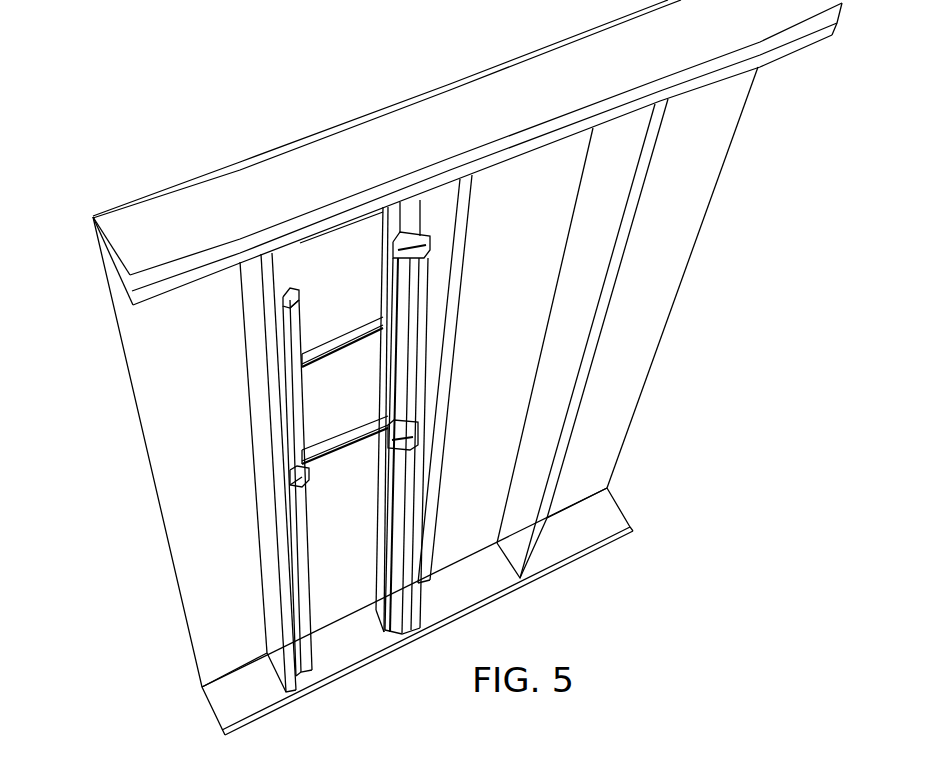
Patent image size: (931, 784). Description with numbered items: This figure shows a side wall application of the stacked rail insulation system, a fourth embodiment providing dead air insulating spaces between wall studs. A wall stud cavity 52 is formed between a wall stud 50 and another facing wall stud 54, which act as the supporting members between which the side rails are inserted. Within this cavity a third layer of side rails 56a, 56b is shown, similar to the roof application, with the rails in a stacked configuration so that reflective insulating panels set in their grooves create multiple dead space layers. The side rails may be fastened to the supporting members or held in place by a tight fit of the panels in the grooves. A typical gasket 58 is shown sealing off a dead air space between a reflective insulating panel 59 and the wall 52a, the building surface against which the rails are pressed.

The wall stud 50 is at (450, 326).
The wall stud cavity 52 is at (335, 270).
The wall 52a is at (205, 437).
The wall stud 54 is at (287, 532).
The side rail 56a is at (303, 607).
The side rail 56b is at (400, 520).
The gasket 58 is at (340, 357).
The reflective insulating panel 59 is at (335, 395).